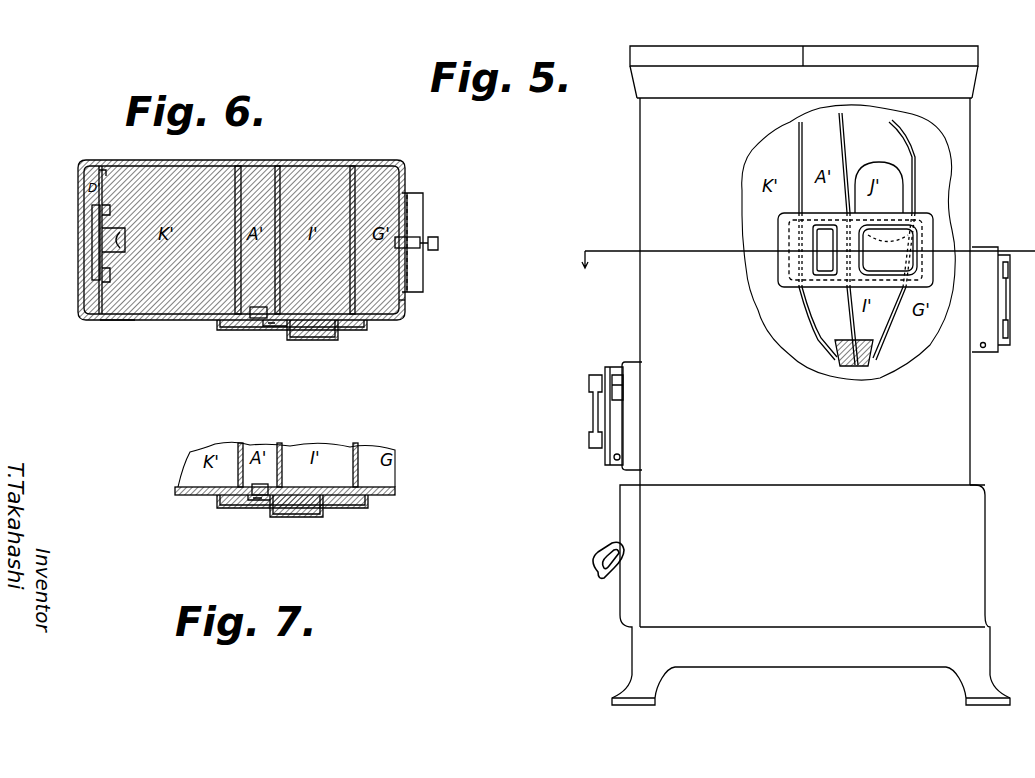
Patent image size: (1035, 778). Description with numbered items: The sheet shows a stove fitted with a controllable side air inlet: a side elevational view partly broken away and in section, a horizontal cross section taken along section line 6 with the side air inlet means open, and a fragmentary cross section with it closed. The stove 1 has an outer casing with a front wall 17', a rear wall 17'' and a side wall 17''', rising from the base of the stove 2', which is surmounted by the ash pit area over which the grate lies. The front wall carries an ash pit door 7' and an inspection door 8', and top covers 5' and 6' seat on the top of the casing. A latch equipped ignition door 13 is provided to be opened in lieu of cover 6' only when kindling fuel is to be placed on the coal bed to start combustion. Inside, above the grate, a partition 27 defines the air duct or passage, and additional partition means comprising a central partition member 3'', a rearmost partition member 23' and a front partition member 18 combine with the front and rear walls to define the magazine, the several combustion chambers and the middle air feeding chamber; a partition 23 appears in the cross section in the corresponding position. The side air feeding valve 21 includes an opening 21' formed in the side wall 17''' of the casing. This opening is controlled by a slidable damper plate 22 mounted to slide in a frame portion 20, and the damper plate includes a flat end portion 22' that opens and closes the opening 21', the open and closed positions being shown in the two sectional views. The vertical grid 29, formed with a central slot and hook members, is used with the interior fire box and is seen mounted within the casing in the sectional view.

In FIG. 5, the stove body 1 is at (640, 163).
In FIG. 5, the top cover 5' is at (786, 45).
In FIG. 5, the top cover 6' is at (820, 66).
In FIG. 5, the ash pit door 7' is at (794, 595).
In FIG. 5, the base of the stove 2' is at (811, 679).
In FIG. 5, the inspection door 8' is at (615, 404).
In FIG. 5, the latch equipped ignition door 13 is at (993, 355).
In FIG. 6, the latch equipped ignition door 13 is at (425, 215).
In FIG. 5, the section line 6- 6 is at (800, 254).
In FIG. 5, the front partition member 18 is at (798, 167).
In FIG. 6, the front partition member 18 is at (235, 270).
In FIG. 5, the central partition member 3'' is at (866, 216).
In FIG. 6, the central partition member 3'' is at (296, 240).
In FIG. 5, the rearmost partition member 23' is at (920, 240).
In FIG. 6, the partition 23 is at (370, 240).
In FIG. 5, the frame portion 20 is at (935, 213).
In FIG. 6, the frame portion 20 is at (225, 330).
In FIG. 7, the frame portion 20 is at (365, 507).
In FIG. 5, the opening 21' is at (802, 273).
In FIG. 7, the opening 21' is at (271, 457).
In FIG. 6, the side air feeding valve 21 is at (257, 289).
In FIG. 5, the slidable damper plate 22 is at (932, 246).
In FIG. 6, the slidable damper plate 22 is at (316, 343).
In FIG. 7, the slidable damper plate 22 is at (296, 522).
In FIG. 6, the flat end portion 22' is at (272, 346).
In FIG. 7, the flat end portion 22' is at (244, 519).
In FIG. 6, the front wall 17' is at (218, 240).
In FIG. 6, the rear wall 17'' is at (428, 321).
In FIG. 6, the side wall 17''' is at (134, 338).
In FIG. 7, the side wall 17''' is at (261, 468).
In FIG. 6, the partition 27 is at (101, 195).
In FIG. 6, the vertical grid 29 is at (92, 232).